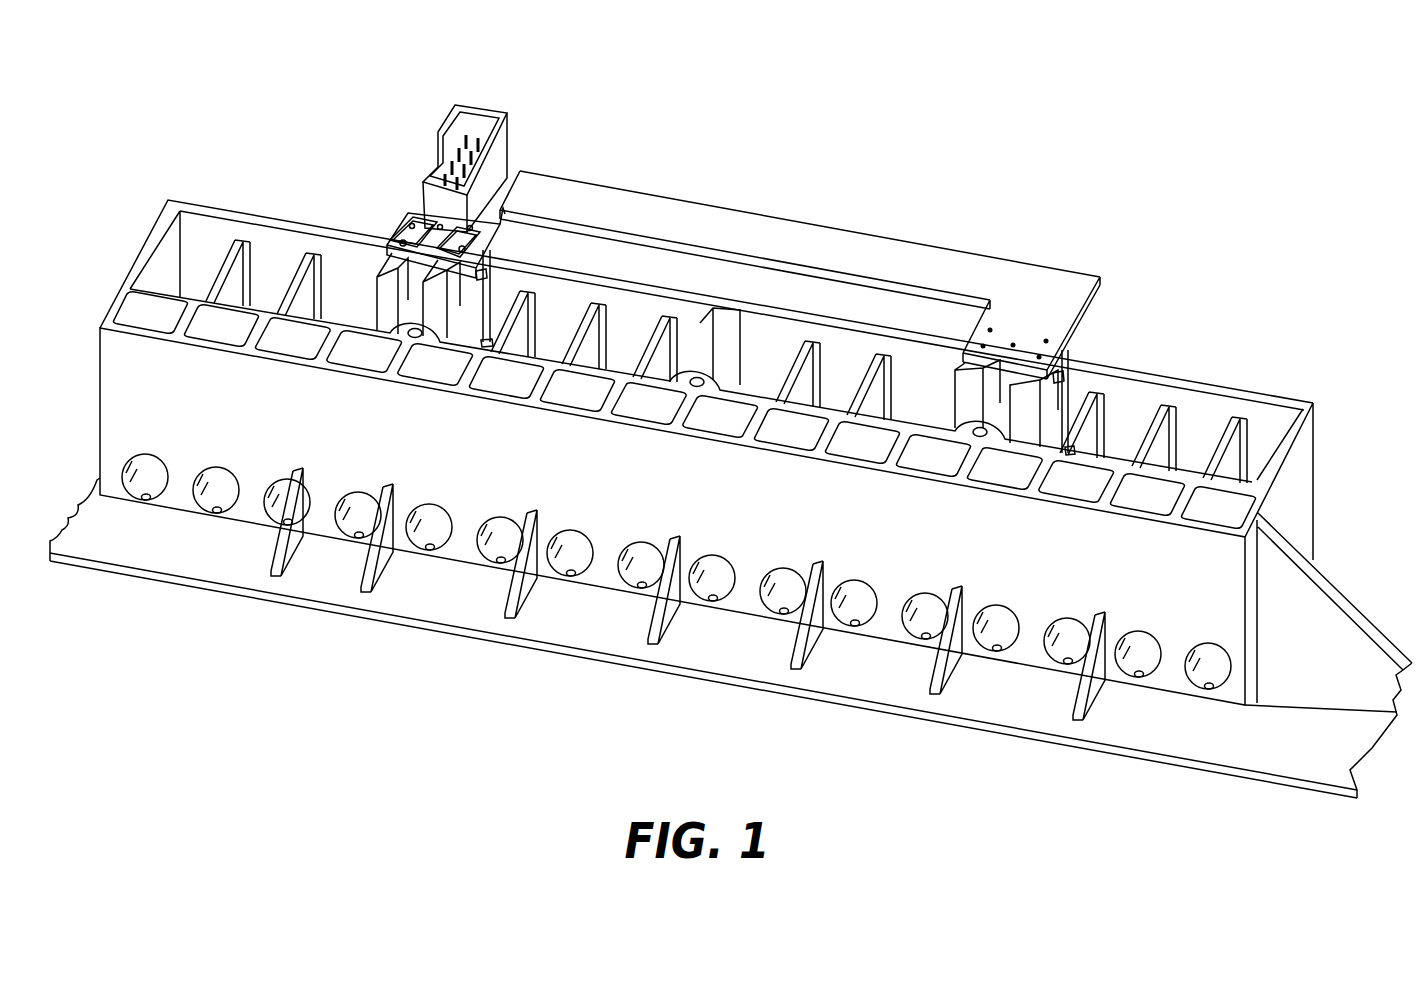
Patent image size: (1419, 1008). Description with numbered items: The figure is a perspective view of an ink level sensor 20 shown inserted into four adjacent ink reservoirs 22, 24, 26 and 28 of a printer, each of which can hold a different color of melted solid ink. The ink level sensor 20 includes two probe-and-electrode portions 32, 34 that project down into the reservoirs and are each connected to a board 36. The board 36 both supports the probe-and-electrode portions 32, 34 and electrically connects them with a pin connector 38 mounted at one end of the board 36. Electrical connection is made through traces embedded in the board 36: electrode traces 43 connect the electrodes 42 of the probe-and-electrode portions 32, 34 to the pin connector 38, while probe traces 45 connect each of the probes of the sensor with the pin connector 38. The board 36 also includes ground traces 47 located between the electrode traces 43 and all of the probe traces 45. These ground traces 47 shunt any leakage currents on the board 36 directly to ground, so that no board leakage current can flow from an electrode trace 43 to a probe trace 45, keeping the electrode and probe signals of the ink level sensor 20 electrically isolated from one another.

The ink level sensor 20 is at (985, 254).
The ink reservoir 22 is at (350, 280).
The ink reservoir 24 is at (630, 330).
The ink reservoir 26 is at (908, 378).
The ink reservoir 28 is at (1202, 427).
The probe-and-electrode portion 32 is at (477, 303).
The probe-and-electrode portion 34 is at (1050, 398).
The board 36 is at (797, 224).
The pin connector 38 is at (445, 131).
The electrodes 42 is at (446, 325).
The electrode traces 43 is at (440, 225).
The probe traces 45 is at (403, 241).
The ground traces 47 is at (402, 238).